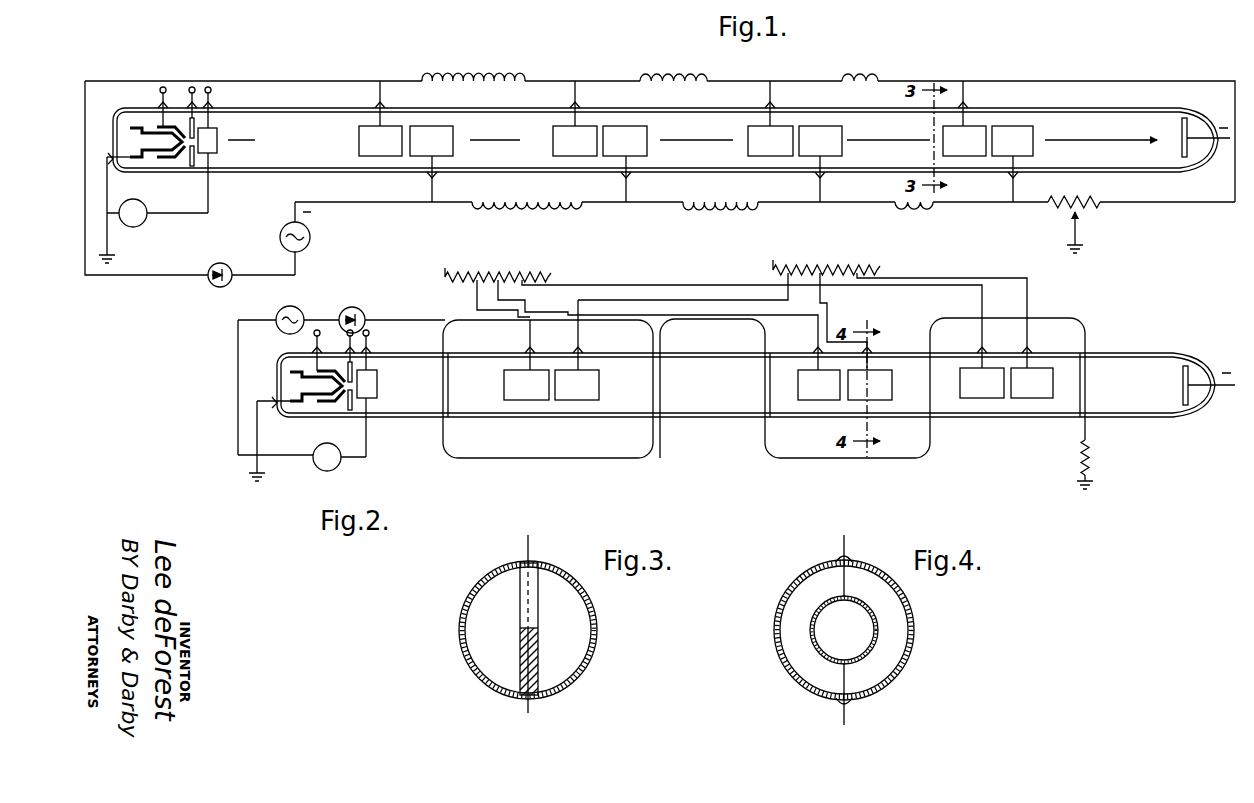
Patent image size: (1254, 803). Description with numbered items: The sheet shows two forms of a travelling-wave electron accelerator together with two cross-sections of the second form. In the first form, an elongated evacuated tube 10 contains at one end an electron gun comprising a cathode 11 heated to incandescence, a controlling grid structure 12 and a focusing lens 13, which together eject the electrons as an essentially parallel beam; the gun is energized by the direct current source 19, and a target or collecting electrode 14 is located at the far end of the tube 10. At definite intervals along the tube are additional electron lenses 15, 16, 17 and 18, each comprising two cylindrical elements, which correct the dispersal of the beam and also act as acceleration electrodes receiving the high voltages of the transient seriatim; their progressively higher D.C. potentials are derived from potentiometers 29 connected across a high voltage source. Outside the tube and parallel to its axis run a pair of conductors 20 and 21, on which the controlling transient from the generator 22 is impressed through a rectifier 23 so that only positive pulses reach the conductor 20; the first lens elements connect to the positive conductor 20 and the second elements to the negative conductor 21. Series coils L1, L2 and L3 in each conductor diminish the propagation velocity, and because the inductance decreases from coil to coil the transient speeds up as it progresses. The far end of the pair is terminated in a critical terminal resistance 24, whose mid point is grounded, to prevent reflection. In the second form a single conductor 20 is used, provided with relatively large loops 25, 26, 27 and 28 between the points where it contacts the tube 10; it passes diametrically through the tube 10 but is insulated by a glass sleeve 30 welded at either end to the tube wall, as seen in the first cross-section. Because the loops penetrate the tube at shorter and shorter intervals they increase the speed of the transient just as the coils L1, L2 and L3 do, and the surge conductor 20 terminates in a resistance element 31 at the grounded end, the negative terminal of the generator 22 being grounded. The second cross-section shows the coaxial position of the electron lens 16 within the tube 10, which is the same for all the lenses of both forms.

In FIG. 1, the evacuated tube 10 is at (261, 110).
In FIG. 2, the evacuated tube 10 is at (600, 352).
In FIG. 3, the evacuated tube 10 is at (598, 629).
In FIG. 4, the evacuated tube 10 is at (914, 629).
In FIG. 1, the cathode 11 is at (134, 126).
In FIG. 2, the cathode 11 is at (290, 372).
In FIG. 1, the controlling grid structure 12 is at (172, 158).
In FIG. 2, the controlling grid structure 12 is at (320, 408).
In FIG. 1, the focusing lens 13 is at (198, 160).
In FIG. 2, the focusing lens 13 is at (352, 412).
In FIG. 1, the target or collecting electrode 14 is at (1190, 152).
In FIG. 2, the target or collecting electrode 14 is at (1182, 385).
In FIG. 1, the electron lens 15 is at (418, 157).
In FIG. 2, the electron lens 15 is at (562, 401).
In FIG. 1, the electron lens 16 is at (618, 157).
In FIG. 2, the electron lens 16 is at (848, 401).
In FIG. 4, the electron lens 16 is at (812, 642).
In FIG. 1, the electron lens 17 is at (815, 157).
In FIG. 2, the electron lens 17 is at (1018, 399).
In FIG. 1, the electron lens 18 is at (1000, 157).
In FIG. 1, the direct current energizing source 19 is at (146, 222).
In FIG. 2, the direct current energizing source 19 is at (340, 466).
In FIG. 1, the conductor 20 is at (318, 80).
In FIG. 2, the conductor 20 is at (448, 326).
In FIG. 3, the conductor 20 is at (530, 542).
In FIG. 1, the conductor 21 is at (415, 204).
In FIG. 1, the generator 22 is at (310, 248).
In FIG. 2, the generator 22 is at (290, 308).
In FIG. 1, the rectifier 23 is at (208, 284).
In FIG. 2, the rectifier 23 is at (362, 312).
In FIG. 1, the critical terminal resistance 24 is at (1088, 207).
In FIG. 2, the loop 25 is at (520, 459).
In FIG. 2, the loop 26 is at (686, 320).
In FIG. 2, the loop 27 is at (822, 459).
In FIG. 2, the loop 28 is at (1048, 319).
In FIG. 2, the potentiometer 29 is at (548, 272).
In FIG. 3, the glass sleeve 30 is at (539, 640).
In FIG. 2, the resistance element 31 is at (1090, 458).
In FIG. 1, the coil L1 is at (446, 72).
In FIG. 1, the coil L2 is at (662, 72).
In FIG. 1, the coil L3 is at (853, 72).